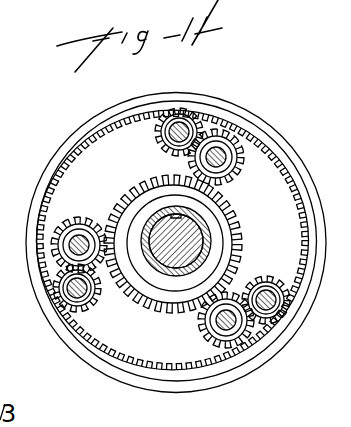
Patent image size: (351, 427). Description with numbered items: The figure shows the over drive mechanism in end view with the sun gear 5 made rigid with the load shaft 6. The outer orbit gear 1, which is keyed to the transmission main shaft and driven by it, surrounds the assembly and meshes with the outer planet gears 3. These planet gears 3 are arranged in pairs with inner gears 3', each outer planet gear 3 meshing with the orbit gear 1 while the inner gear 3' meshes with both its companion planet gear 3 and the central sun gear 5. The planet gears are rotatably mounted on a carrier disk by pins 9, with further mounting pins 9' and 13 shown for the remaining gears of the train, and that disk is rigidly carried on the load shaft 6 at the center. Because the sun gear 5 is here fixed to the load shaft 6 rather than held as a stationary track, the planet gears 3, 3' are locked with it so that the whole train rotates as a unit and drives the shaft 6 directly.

The orbit gear 1 is at (52, 169).
The planet gear 3 is at (160, 134).
The inner gear 3' is at (234, 228).
The sun gear 5 is at (160, 308).
The load shaft 6 is at (190, 233).
The pin 9 is at (86, 297).
The gear 9' is at (152, 266).
The pinion 13 is at (264, 289).